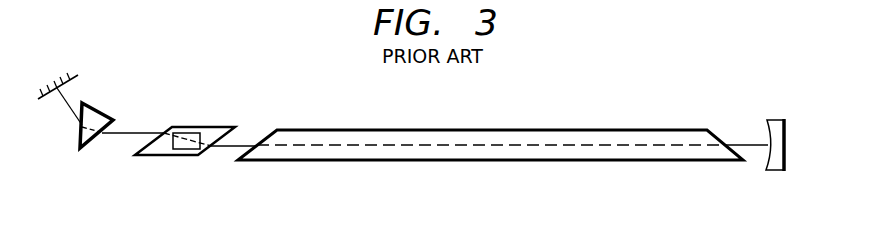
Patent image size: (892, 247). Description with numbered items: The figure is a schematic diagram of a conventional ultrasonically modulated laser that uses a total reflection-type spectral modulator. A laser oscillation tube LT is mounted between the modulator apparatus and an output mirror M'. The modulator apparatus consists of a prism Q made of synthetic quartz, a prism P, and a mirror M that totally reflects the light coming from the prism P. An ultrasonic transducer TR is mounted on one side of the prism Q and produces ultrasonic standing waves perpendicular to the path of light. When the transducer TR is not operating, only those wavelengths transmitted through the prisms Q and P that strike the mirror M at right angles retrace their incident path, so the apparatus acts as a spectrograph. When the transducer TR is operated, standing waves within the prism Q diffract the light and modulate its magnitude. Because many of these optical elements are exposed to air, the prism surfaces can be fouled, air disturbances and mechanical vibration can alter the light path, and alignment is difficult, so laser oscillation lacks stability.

The mirror M is at (58, 70).
The prism P is at (99, 110).
The prism Q is at (222, 127).
The ultrasonic transducer TR is at (189, 133).
The laser oscillation tube LT is at (495, 130).
The output mirror M' is at (781, 122).